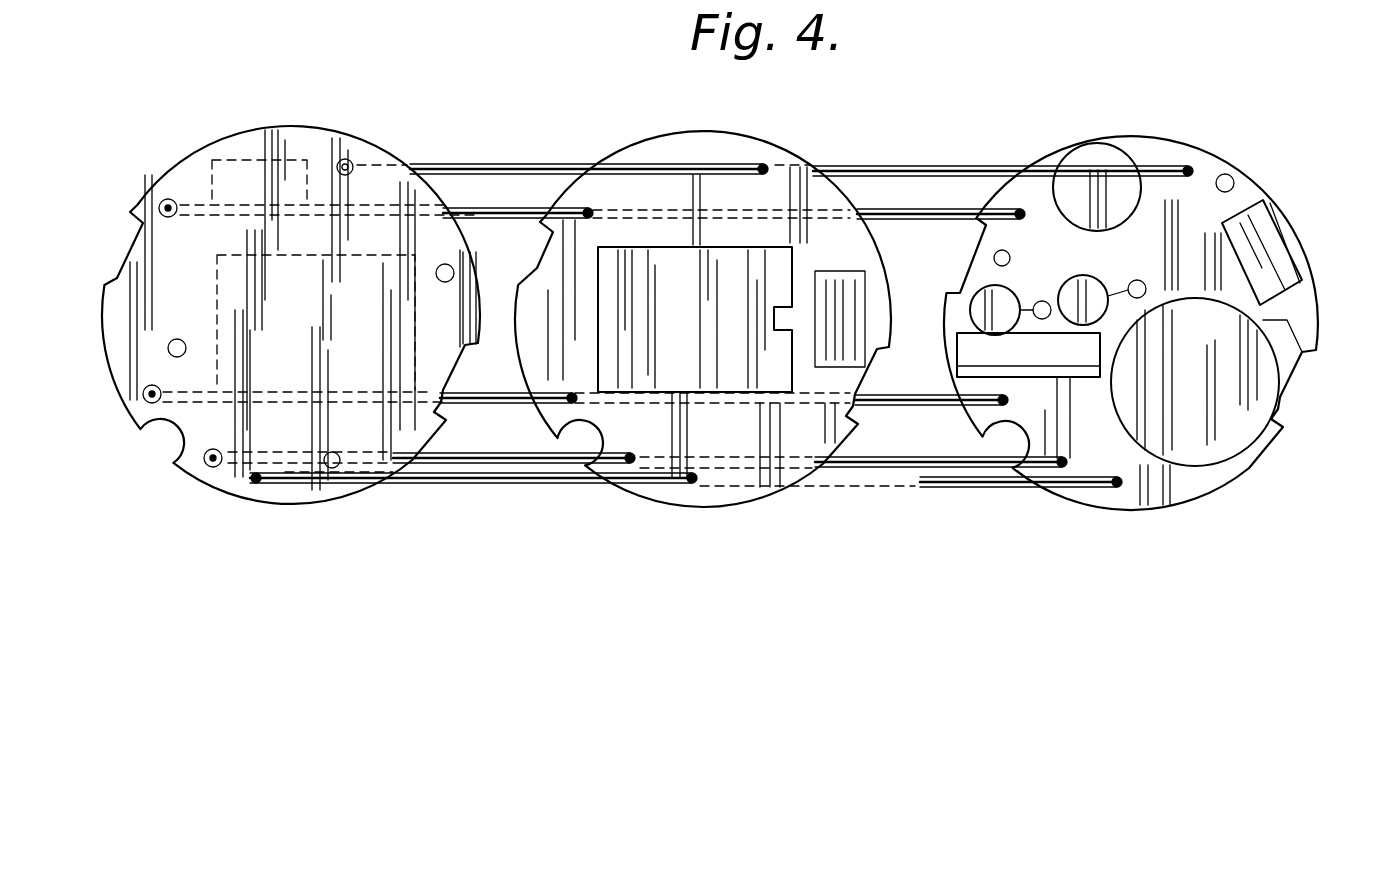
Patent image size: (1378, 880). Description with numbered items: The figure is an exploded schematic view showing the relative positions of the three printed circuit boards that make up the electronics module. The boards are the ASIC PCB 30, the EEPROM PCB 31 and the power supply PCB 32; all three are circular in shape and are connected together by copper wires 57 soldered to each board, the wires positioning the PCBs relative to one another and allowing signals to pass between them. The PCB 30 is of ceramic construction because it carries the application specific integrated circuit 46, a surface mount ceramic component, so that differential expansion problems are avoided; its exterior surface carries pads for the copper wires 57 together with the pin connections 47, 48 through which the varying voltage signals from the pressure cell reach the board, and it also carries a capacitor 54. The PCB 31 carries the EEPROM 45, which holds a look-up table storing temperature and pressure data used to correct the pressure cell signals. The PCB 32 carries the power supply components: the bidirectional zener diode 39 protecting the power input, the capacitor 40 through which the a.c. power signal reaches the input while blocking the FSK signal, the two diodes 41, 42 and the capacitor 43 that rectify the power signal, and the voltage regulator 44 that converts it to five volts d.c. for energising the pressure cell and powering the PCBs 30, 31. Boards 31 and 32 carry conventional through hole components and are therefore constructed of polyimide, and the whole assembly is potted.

The ASIC PCB 30 is at (302, 503).
The EEPROM PCB 31 is at (740, 504).
The power supply PCB 32 is at (1230, 477).
The bidirectional zener diode 39 is at (1100, 145).
The capacitor 40 is at (1238, 178).
The diode 41 is at (1052, 210).
The diode 42 is at (975, 297).
The capacitor 43 is at (978, 352).
The voltage regulator 44 is at (1282, 412).
The EEPROM 45 is at (616, 247).
The application specific integrated circuit 46 is at (217, 300).
The pin connection 47 is at (450, 264).
The pin connection 48 is at (170, 355).
The capacitor 54 is at (236, 152).
The copper wires 57 is at (456, 211).